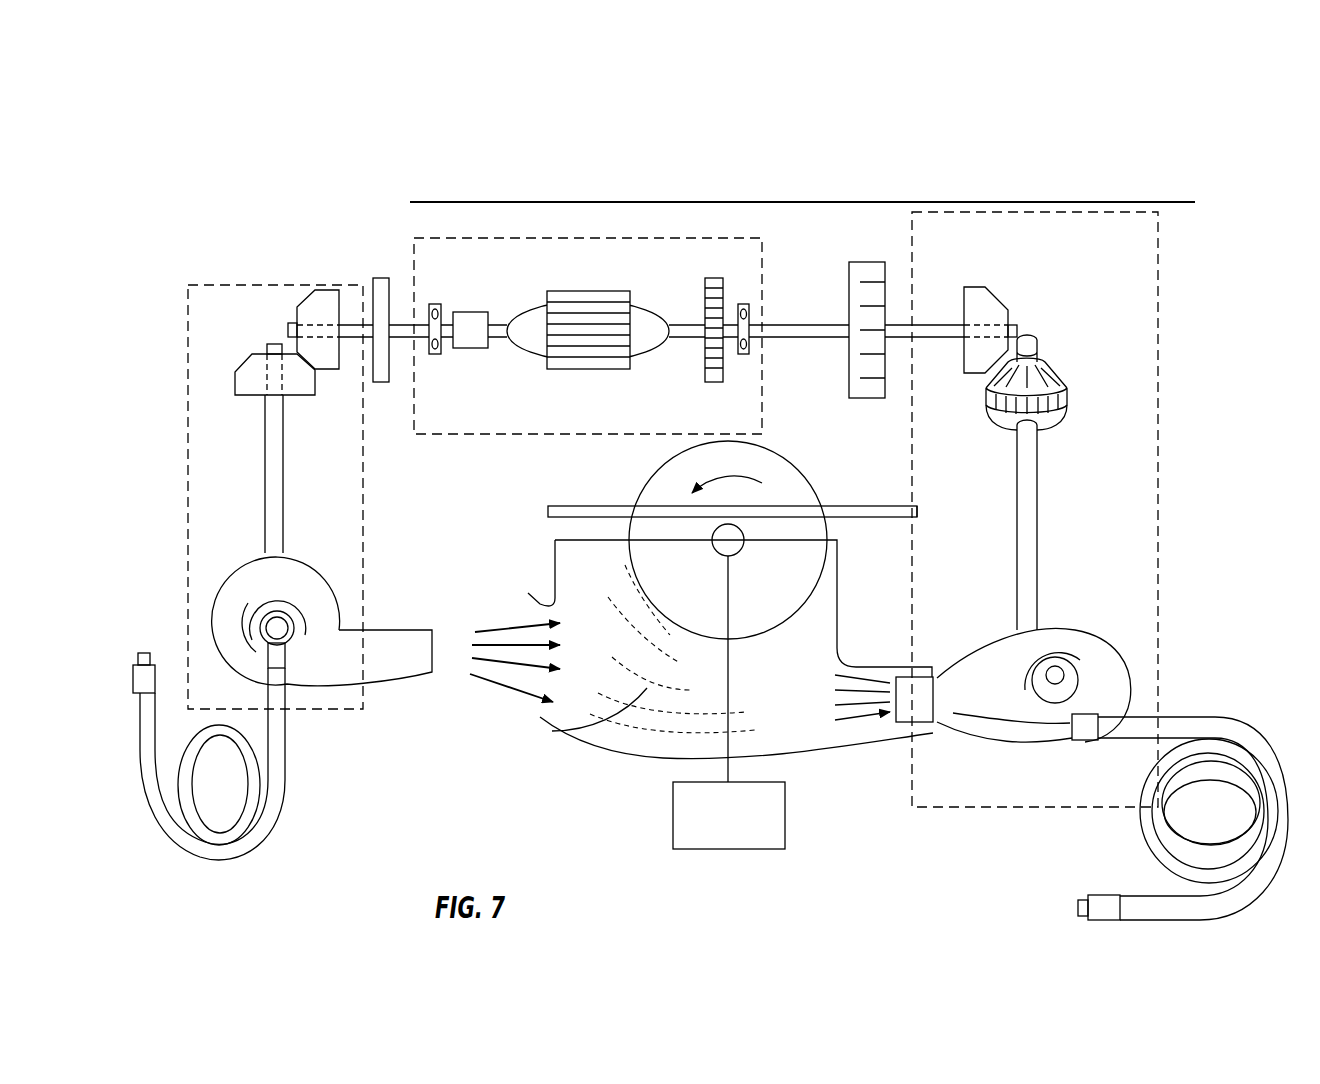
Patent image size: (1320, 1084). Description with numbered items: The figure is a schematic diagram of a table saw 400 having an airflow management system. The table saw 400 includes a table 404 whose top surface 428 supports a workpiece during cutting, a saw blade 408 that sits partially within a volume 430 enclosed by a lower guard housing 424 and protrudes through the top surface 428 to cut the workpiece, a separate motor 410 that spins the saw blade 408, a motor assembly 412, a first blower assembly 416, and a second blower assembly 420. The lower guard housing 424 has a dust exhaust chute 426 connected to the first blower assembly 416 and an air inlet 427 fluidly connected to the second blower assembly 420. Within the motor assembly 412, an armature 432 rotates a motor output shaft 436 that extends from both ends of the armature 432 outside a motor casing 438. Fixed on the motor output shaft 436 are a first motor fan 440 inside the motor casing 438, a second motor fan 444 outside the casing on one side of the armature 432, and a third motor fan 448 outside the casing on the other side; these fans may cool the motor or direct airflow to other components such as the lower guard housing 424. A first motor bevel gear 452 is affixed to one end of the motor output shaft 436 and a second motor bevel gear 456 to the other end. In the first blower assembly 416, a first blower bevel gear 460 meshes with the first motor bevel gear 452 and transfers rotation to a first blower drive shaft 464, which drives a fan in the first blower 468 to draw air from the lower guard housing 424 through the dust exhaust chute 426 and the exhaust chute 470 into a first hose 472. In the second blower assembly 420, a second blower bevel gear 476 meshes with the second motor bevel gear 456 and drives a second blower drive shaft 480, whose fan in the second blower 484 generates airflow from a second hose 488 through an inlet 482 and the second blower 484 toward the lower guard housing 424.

The table saw 400 is at (1028, 170).
The table 404 is at (602, 506).
The saw blade 408 is at (770, 470).
The motor 410 is at (673, 812).
The motor assembly 412 is at (615, 259).
The first blower assembly 416 is at (1082, 503).
The second blower assembly 420 is at (240, 441).
The lower guard housing 424 is at (597, 748).
The dust exhaust chute 426 is at (893, 740).
The air inlet 427 is at (503, 602).
The top surface 428 is at (869, 494).
The volume 430 is at (552, 731).
The armature 432 is at (598, 295).
The motor output shaft 436 is at (792, 330).
The motor casing 438 is at (540, 237).
The first motor fan 440 is at (721, 311).
The second motor fan 444 is at (874, 317).
The third motor fan 448 is at (380, 300).
The first motor bevel gear 452 is at (993, 303).
The second motor bevel gear 456 is at (315, 322).
The first blower bevel gear 460 is at (1035, 509).
The first blower drive shaft 464 is at (1030, 484).
The first blower 468 is at (1057, 668).
The exhaust chute 470 is at (1063, 738).
The first hose 472 is at (1105, 716).
The second blower bevel gear 476 is at (267, 380).
The second blower drive shaft 480 is at (273, 470).
The inlet 482 is at (265, 632).
The second blower 484 is at (277, 588).
The second hose 488 is at (280, 743).